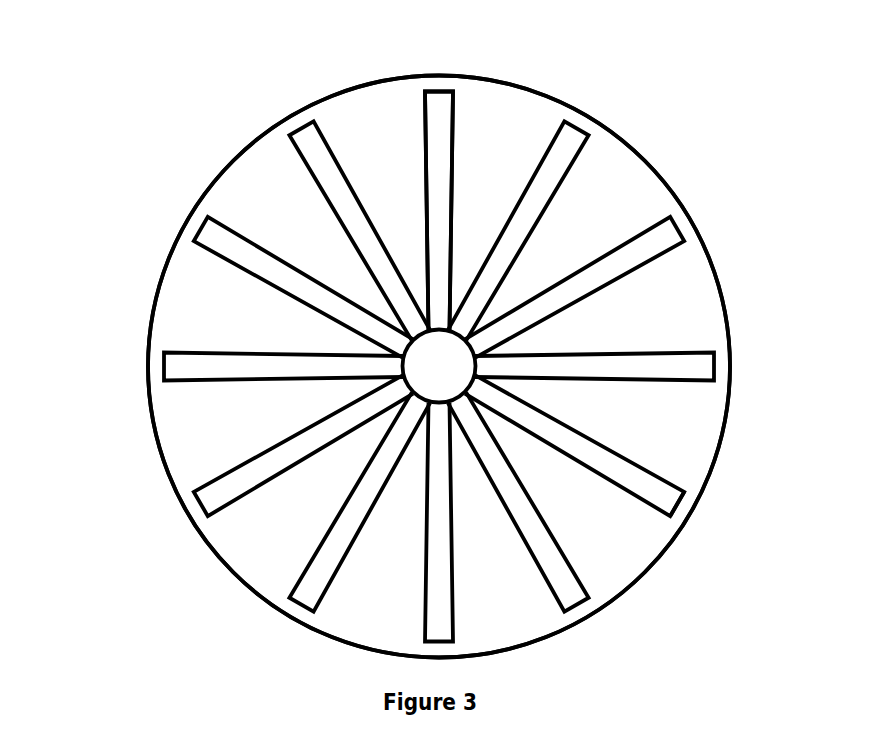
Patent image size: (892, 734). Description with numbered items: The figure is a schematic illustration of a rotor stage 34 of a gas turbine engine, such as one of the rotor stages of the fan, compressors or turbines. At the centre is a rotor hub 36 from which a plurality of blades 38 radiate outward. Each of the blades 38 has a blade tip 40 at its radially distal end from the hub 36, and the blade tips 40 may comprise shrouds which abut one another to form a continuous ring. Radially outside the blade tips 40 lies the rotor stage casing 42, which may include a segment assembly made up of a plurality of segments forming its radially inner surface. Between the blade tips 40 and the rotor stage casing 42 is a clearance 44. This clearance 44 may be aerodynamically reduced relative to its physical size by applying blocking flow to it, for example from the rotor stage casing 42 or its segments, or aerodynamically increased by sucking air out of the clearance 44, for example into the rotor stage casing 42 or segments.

The rotor stage 34 is at (157, 192).
The rotor hub 36 is at (447, 360).
The blades 38 is at (615, 472).
The blade tip 40 is at (673, 507).
The rotor stage casing 42 is at (647, 158).
The clearance 44 is at (408, 92).